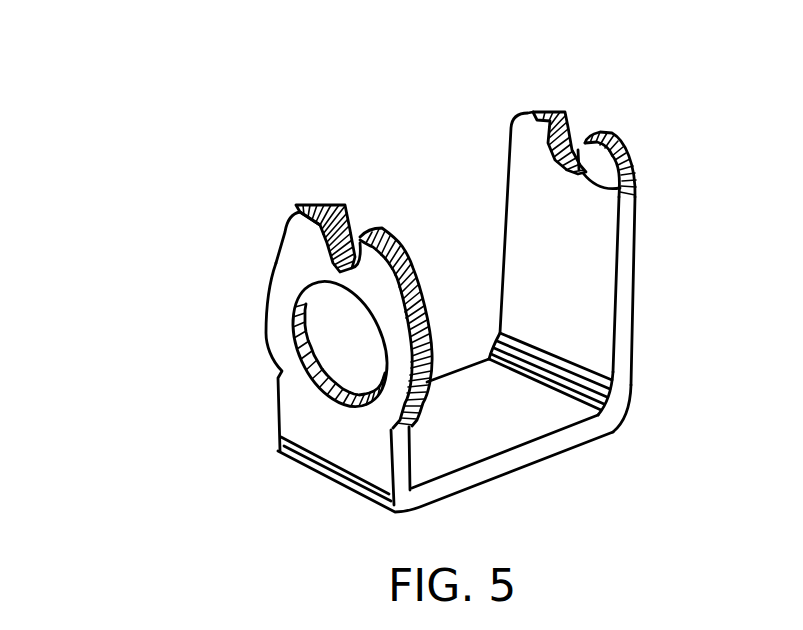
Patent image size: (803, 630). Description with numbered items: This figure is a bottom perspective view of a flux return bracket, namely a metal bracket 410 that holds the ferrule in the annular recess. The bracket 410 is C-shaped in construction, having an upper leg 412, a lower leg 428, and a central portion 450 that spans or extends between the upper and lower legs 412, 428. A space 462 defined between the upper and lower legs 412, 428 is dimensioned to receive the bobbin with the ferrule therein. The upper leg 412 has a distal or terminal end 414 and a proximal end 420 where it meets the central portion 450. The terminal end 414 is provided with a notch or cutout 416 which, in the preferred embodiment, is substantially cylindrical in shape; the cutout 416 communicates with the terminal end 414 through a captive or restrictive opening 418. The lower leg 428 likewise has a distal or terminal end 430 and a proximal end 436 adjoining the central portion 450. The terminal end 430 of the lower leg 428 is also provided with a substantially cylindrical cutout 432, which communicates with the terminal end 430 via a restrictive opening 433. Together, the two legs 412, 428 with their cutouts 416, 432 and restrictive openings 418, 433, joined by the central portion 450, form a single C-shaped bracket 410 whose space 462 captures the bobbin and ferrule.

The bracket 410 is at (250, 197).
The upper leg 412 is at (503, 188).
The terminal end 414 is at (548, 114).
The cutout 416 is at (636, 186).
The restrictive opening 418 is at (583, 126).
The proximal end 420 is at (618, 377).
The lower leg 428 is at (264, 345).
The terminal end 430 is at (298, 230).
The cutout 432 is at (298, 262).
The restrictive opening 433 is at (352, 222).
The proximal end 436 is at (288, 431).
The central portion 450 is at (565, 468).
The space 462 is at (422, 196).